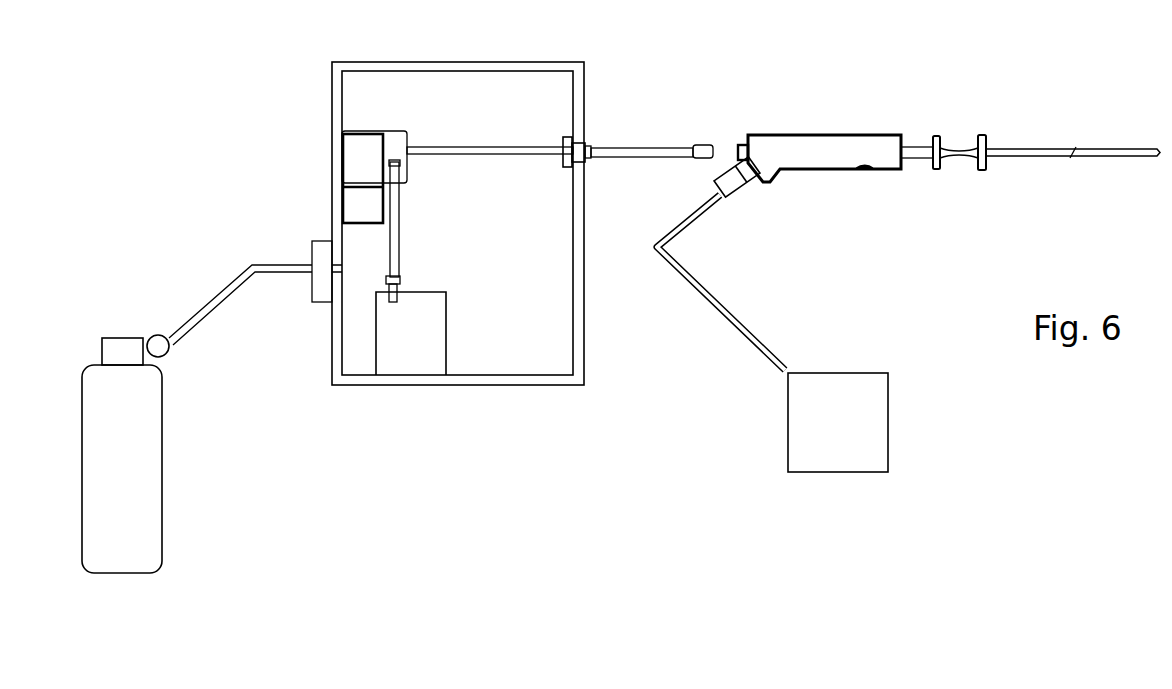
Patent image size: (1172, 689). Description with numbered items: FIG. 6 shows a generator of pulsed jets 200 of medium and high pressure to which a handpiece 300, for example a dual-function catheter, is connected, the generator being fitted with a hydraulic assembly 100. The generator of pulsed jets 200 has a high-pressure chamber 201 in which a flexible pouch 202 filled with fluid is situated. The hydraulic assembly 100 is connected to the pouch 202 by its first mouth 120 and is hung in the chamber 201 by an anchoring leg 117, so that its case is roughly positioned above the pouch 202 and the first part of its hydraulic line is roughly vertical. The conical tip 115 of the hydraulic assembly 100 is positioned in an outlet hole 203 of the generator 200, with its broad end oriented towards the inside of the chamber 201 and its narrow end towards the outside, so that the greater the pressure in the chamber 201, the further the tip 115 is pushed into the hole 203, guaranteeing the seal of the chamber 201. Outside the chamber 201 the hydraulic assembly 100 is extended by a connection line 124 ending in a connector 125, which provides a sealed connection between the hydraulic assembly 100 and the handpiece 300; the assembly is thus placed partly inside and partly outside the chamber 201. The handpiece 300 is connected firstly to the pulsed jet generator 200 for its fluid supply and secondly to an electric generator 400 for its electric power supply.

The hydraulic assembly 100 is at (425, 118).
The conical tip 115 is at (583, 140).
The anchoring leg 117 is at (378, 128).
The first mouth 120 is at (408, 286).
The connection line 124 is at (672, 140).
The connector 125 is at (703, 145).
The generator of pulsed jets 200 is at (195, 155).
The high-pressure chamber 201 is at (320, 90).
The flexible pouch 202 is at (418, 357).
The outlet hole 203 is at (590, 153).
The handpiece 300 is at (886, 92).
The electric generator 400 is at (818, 434).